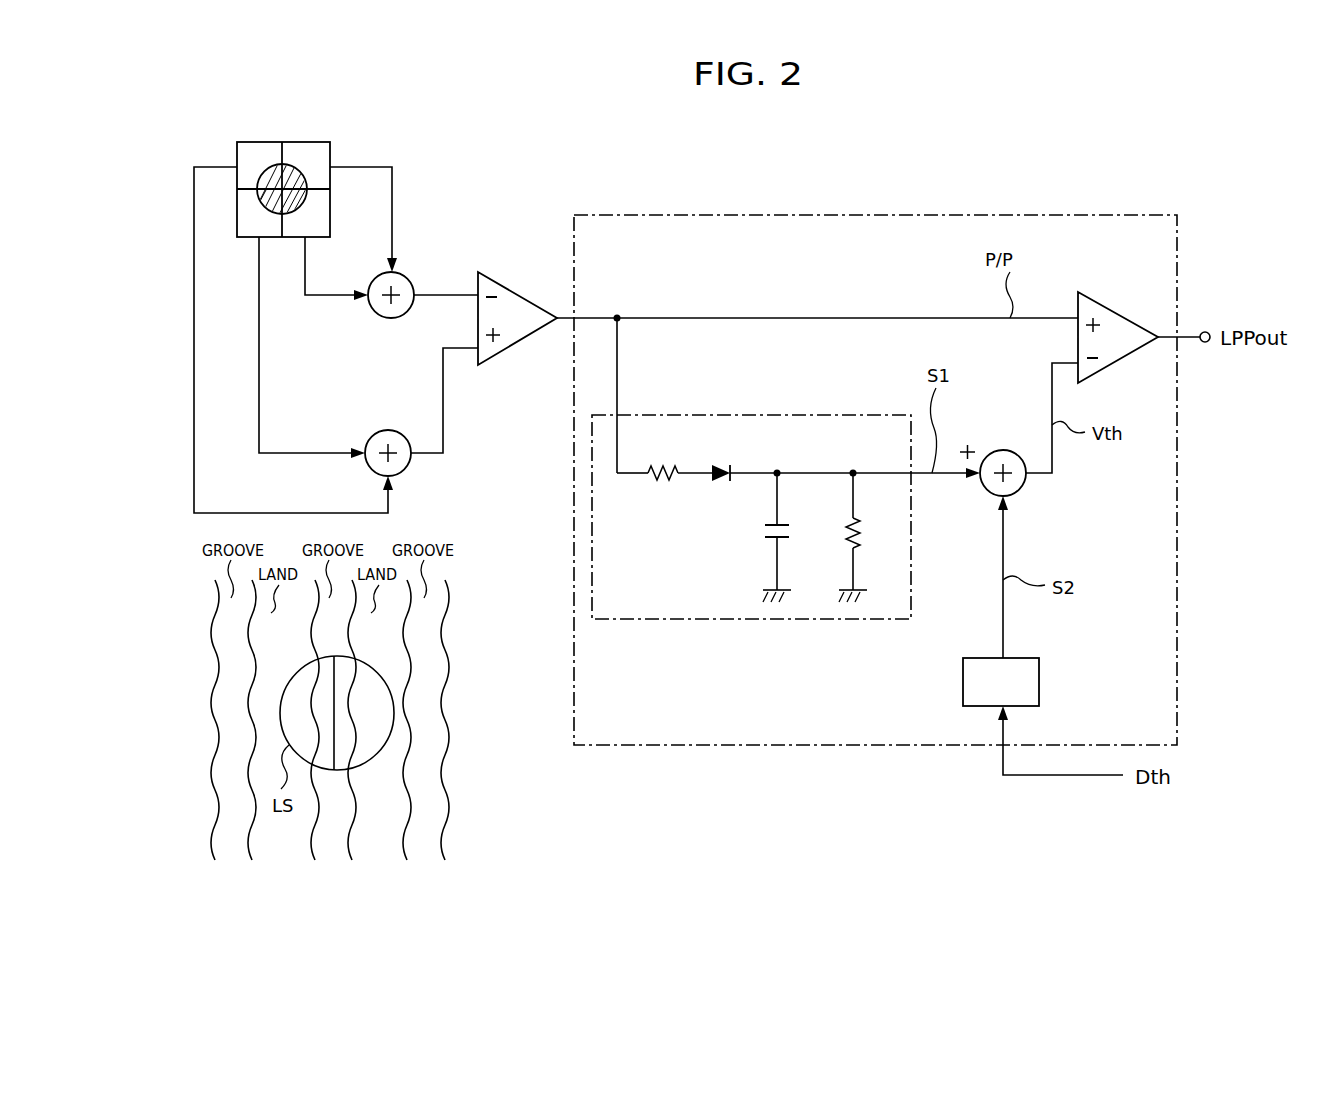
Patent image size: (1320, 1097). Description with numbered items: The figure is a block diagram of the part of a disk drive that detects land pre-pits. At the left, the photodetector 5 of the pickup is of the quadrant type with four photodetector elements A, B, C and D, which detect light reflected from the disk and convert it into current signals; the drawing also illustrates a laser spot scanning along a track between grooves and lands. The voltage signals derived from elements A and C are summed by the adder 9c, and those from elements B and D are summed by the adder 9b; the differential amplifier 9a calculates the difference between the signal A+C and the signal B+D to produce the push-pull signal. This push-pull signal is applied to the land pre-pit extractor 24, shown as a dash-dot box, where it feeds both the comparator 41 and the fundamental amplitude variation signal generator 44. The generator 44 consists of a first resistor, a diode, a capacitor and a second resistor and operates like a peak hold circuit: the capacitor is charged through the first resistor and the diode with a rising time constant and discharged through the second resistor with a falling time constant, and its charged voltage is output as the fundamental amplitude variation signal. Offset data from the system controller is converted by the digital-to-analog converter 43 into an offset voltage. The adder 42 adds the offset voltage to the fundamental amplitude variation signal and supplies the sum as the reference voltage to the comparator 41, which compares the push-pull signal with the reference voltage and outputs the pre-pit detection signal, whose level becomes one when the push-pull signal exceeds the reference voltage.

The photodetector 5 is at (297, 142).
The differential amplifier 9a is at (515, 290).
The adder 9b is at (403, 273).
The adder 9c is at (390, 430).
The land pre-pit extractor 24 is at (641, 745).
The comparator 41 is at (1118, 269).
The adder 42 is at (1000, 450).
The digital-to-analog converter 43 is at (1039, 678).
The fundamental amplitude variation signal generator 44 is at (688, 415).